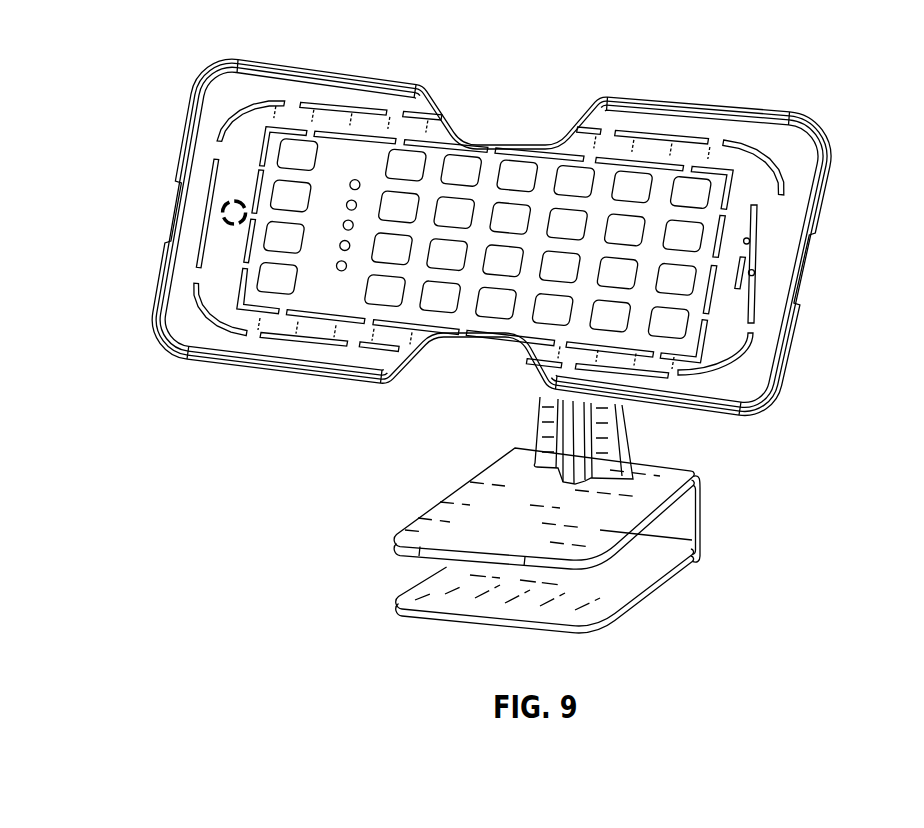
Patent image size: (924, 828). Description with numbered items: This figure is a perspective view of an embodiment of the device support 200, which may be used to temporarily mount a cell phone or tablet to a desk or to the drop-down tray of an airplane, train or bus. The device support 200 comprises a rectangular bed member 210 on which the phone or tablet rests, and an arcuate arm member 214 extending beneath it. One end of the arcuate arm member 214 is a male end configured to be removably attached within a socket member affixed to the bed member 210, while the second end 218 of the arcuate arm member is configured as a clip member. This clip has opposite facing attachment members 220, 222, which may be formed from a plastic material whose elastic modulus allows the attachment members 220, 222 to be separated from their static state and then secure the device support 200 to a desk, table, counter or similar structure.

The device support 200 is at (534, 332).
The bed member 210 is at (534, 237).
The arcuate arm member 214 is at (624, 440).
The second end 218 is at (654, 559).
The attachment member 220 is at (527, 508).
The attachment member 222 is at (514, 591).